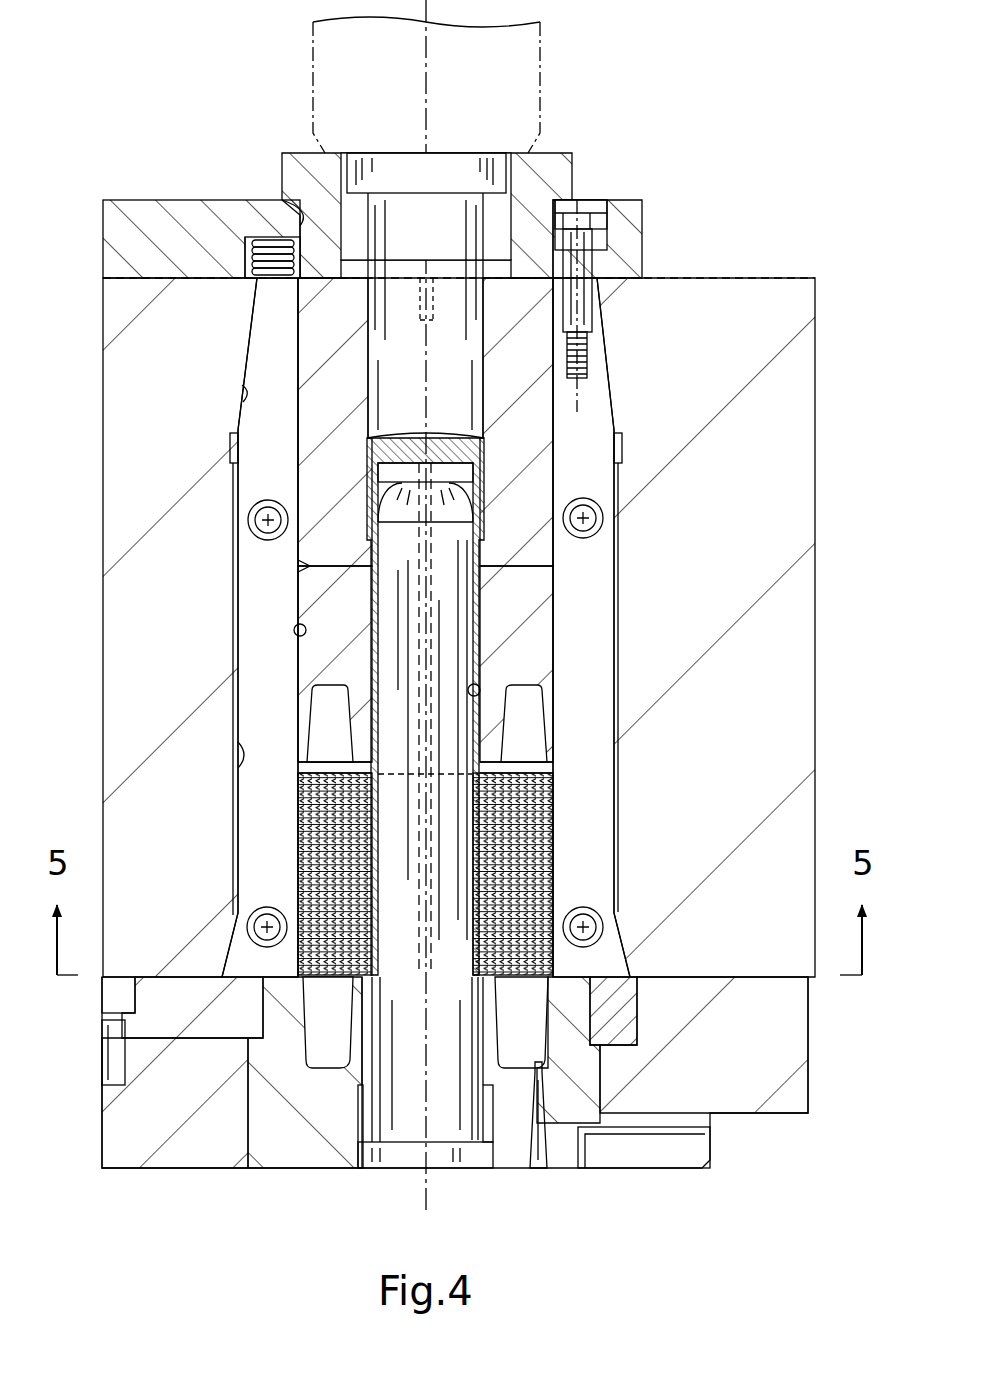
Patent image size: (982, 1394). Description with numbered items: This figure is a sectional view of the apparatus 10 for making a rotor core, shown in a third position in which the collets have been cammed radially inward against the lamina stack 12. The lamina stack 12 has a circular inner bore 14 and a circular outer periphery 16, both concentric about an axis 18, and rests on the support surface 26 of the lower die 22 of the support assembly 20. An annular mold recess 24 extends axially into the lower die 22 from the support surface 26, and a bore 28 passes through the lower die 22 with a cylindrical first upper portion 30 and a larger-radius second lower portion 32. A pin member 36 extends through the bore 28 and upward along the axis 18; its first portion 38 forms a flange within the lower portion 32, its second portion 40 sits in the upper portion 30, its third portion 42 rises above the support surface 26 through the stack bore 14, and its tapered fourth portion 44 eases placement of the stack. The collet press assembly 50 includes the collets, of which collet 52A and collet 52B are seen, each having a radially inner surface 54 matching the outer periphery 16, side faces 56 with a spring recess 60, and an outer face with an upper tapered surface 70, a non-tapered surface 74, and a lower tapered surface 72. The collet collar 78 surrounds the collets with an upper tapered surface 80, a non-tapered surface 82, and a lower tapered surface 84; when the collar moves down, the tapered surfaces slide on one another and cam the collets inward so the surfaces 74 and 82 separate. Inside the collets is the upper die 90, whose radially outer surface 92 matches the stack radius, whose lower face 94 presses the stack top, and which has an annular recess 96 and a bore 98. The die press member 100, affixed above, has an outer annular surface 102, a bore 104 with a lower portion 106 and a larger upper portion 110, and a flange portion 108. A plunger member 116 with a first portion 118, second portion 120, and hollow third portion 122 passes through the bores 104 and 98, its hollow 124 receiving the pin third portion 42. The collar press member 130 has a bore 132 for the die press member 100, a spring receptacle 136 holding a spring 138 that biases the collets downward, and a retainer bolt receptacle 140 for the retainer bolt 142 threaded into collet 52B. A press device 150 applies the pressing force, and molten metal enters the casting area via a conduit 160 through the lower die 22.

The apparatus 10 is at (748, 150).
The lamina stack 12 is at (550, 794).
The inner bore 14 is at (474, 934).
The outer periphery 16 is at (554, 826).
The axis 18 is at (426, 1205).
The support assembly 20 is at (190, 1170).
The lower die 22 is at (286, 1170).
The annular mold recess 24 is at (316, 1040).
The support surface 26 is at (742, 977).
The bore 28 is at (372, 1112).
The first upper portion of bore 30 is at (482, 1022).
The second lower portion of bore 32 is at (486, 1112).
The pin member 36 is at (441, 1172).
The first portion of pin member 38 is at (458, 1160).
The second portion of pin member 40 is at (414, 1148).
The third portion of pin member 42 is at (410, 592).
The fourth portion of pin member 44 is at (388, 494).
The collet press assembly 50 is at (758, 270).
The collet 52A is at (237, 822).
The collet 52B is at (618, 846).
The radially inner surface 54 is at (297, 633).
The side face 56 is at (252, 606).
The spring recess 60 is at (268, 541).
The upper tapered surface 70 is at (246, 352).
The lower tapered surface 72 is at (228, 952).
The non-tapered surface 74 is at (238, 718).
The collet collar 78 is at (130, 558).
The upper tapered surface of collet collar 80 is at (243, 393).
The non-tapered surface of collet collar 82 is at (238, 770).
The lower tapered surface of collet collar 84 is at (238, 932).
The upper die 90 is at (582, 648).
The radially outer surface 92 is at (555, 612).
The lower face 94 is at (553, 766).
The annular recess 96 is at (530, 720).
The bore 98 is at (373, 646).
The die press member 100 is at (566, 476).
The outer annular surface 102 is at (600, 522).
The bore 104 is at (346, 212).
The lower portion of bore 106 is at (372, 334).
The flange portion 108 is at (552, 160).
The upper portion of bore 110 is at (502, 230).
The plunger member 116 is at (404, 158).
The first portion of plunger member 118 is at (452, 172).
The second portion of plunger member 120 is at (470, 386).
The third portion of plunger member 122 is at (482, 626).
The hollow 124 is at (478, 688).
The collar press member 130 is at (142, 210).
The cylindrical bore 132 is at (300, 210).
The spring receptacle 136 is at (252, 274).
The spring 138 is at (275, 282).
The retainer bolt receptacle 140 is at (600, 212).
The retainer bolt 142 is at (590, 332).
The press device 150 is at (512, 48).
The conduit 160 is at (538, 1162).